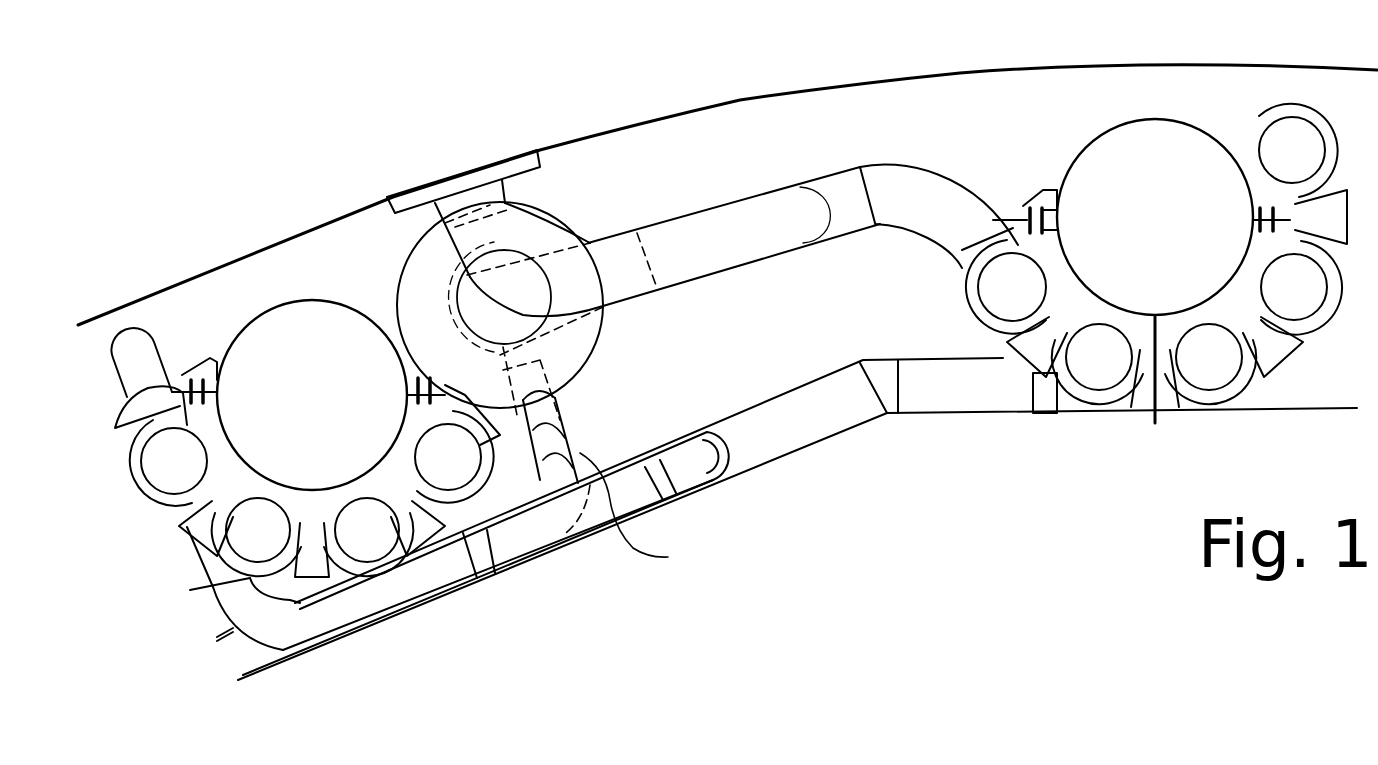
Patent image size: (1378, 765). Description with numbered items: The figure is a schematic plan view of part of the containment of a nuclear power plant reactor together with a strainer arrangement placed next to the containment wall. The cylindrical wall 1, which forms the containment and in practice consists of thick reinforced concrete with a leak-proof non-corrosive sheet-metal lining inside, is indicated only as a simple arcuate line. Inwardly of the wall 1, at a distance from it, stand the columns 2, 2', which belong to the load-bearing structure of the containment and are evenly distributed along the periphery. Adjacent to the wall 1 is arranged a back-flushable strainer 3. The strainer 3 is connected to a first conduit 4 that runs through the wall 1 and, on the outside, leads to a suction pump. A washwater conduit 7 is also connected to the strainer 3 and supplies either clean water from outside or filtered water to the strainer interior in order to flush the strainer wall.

The cylindrical wall 1 is at (823, 90).
The column 2 is at (1156, 255).
The column 2' is at (315, 408).
The back-flushable strainer 3 is at (593, 362).
The first conduit 4 is at (683, 210).
The washwater conduit 7 is at (607, 486).